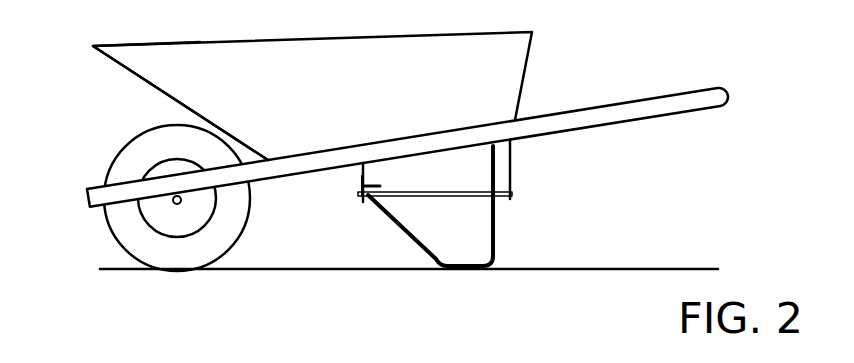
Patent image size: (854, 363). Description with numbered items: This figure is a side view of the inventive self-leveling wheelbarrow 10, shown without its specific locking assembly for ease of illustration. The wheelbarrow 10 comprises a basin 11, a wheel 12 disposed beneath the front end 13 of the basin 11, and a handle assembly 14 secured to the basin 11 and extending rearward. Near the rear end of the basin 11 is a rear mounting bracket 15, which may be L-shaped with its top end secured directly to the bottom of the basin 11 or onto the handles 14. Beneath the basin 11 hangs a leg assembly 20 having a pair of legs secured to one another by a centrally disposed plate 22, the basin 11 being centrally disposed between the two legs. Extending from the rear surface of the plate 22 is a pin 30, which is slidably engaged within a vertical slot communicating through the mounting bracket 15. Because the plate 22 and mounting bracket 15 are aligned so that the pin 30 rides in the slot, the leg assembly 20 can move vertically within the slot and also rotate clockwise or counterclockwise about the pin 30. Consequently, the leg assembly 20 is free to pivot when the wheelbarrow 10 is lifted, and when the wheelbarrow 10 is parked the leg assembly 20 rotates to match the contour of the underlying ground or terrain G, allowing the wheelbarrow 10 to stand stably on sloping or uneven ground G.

The wheelbarrow 10 is at (605, 25).
The basin 11 is at (388, 112).
The wheel 12 is at (118, 229).
The front end 13 is at (81, 84).
The handle assembly 14 is at (703, 95).
The rear mounting bracket 15 is at (511, 157).
The leg assembly 20 is at (537, 225).
The plate 22 is at (492, 150).
The pin 30 is at (418, 196).
The ground G is at (670, 268).